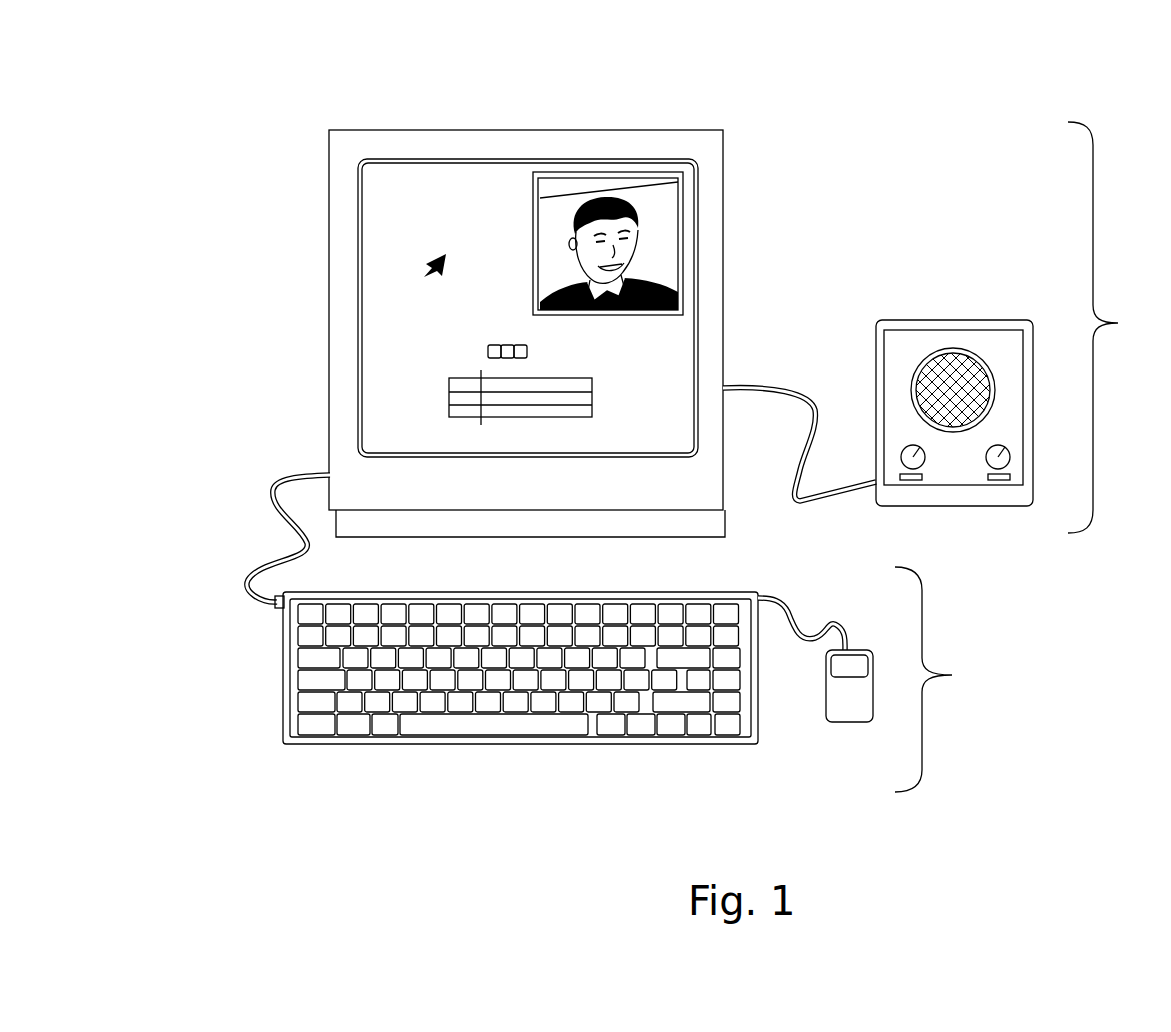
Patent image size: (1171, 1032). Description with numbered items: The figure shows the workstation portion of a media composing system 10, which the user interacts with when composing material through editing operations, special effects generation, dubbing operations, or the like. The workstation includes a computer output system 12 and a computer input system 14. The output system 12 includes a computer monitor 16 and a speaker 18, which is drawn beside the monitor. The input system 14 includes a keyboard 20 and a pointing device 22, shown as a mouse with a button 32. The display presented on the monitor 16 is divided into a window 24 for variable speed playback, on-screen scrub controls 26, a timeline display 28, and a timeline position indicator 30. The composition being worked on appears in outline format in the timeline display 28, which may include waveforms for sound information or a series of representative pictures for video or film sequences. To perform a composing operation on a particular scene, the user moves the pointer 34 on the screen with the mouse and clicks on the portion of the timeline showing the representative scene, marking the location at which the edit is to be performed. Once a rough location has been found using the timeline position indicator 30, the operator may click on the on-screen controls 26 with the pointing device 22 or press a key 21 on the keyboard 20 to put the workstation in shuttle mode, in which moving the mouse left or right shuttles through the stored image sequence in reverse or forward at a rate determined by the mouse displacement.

The system 10 is at (940, 85).
The computer output system 12 is at (1113, 327).
The computer input system 14 is at (938, 679).
The computer monitor 16 is at (436, 126).
The speaker 18 is at (924, 318).
The keyboard 20 is at (283, 745).
The key 21 is at (541, 692).
The pointing device 22 is at (821, 728).
The window 24 is at (612, 170).
The on-screen scrub controls 26 is at (532, 345).
The timeline display 28 is at (432, 402).
The timeline position indicator 30 is at (478, 398).
The button 32 is at (866, 665).
The pointer 34 is at (426, 270).